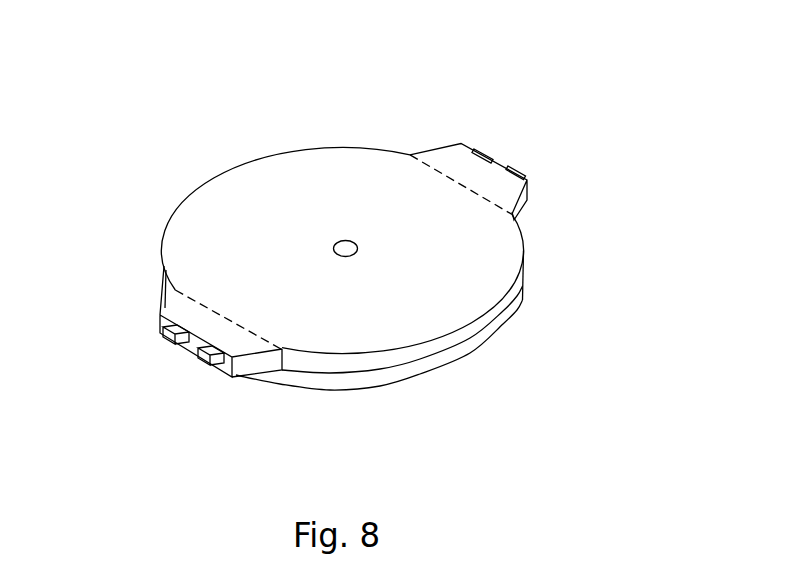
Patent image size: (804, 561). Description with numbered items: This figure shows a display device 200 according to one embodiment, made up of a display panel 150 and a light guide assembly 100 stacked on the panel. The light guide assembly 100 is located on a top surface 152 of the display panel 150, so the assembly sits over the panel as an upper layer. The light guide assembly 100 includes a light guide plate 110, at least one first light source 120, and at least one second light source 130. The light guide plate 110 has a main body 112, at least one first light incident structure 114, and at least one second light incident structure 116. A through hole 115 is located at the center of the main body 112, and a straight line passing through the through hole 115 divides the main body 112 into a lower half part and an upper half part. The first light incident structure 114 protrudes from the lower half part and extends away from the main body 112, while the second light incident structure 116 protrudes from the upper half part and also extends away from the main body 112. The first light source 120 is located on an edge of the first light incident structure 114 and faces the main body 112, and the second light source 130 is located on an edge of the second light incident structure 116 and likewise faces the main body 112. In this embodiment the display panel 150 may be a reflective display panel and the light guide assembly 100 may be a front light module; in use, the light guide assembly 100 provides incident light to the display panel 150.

The display device 200 is at (88, 38).
The light guide assembly 100 is at (693, 187).
The light guide plate 110 is at (350, 50).
The main body 112 is at (285, 178).
The first light incident structure 114 is at (196, 325).
The second light incident structure 116 is at (447, 158).
The through hole 115 is at (359, 259).
The first light source 120 is at (162, 334).
The second light source 130 is at (522, 172).
The display panel 150 is at (481, 345).
The top surface 152 is at (450, 359).